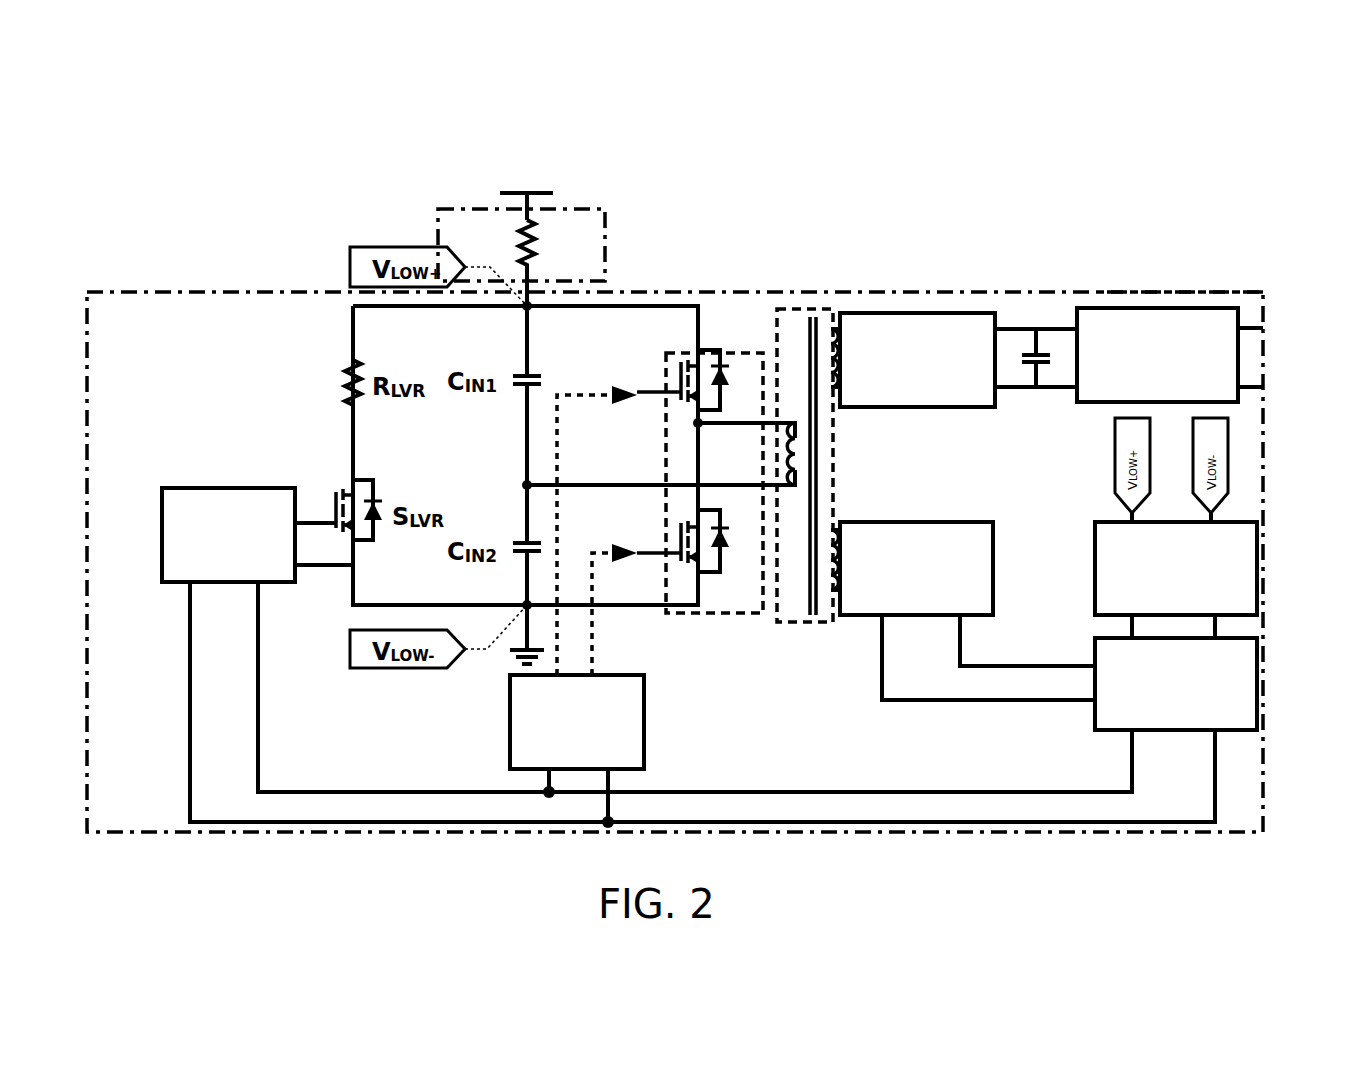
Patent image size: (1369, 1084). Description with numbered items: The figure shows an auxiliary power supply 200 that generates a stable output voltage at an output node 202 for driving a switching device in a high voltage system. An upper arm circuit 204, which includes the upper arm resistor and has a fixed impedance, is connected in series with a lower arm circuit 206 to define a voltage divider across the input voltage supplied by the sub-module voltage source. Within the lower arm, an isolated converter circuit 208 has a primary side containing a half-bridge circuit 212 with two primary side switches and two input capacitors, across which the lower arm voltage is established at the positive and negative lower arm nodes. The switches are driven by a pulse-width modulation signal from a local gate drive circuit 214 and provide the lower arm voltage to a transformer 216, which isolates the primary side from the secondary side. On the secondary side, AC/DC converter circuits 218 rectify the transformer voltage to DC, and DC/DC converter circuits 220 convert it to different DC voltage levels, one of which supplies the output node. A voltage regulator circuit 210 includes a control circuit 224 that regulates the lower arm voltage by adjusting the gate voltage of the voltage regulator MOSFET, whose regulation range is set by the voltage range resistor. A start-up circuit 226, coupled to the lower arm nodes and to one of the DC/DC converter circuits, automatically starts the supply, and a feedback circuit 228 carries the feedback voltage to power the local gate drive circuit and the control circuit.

The auxiliary power supply 200 is at (209, 133).
The output node 202 is at (1266, 343).
The upper arm circuit 204 is at (582, 209).
The lower arm circuit 206 is at (1263, 292).
The isolated converter circuit 208 is at (748, 306).
The voltage regulator circuit 210 is at (178, 302).
The half-bridge circuit 212 is at (641, 348).
The local gate drive circuit 214 is at (646, 713).
The transformer 216 is at (680, 504).
The AC/DC converter circuit 218 is at (960, 408).
The DC/DC converter circuit 220 is at (1077, 405).
The control circuit 224 is at (188, 488).
The start-up circuit 226 is at (1095, 566).
The feedback circuit 228 is at (832, 790).